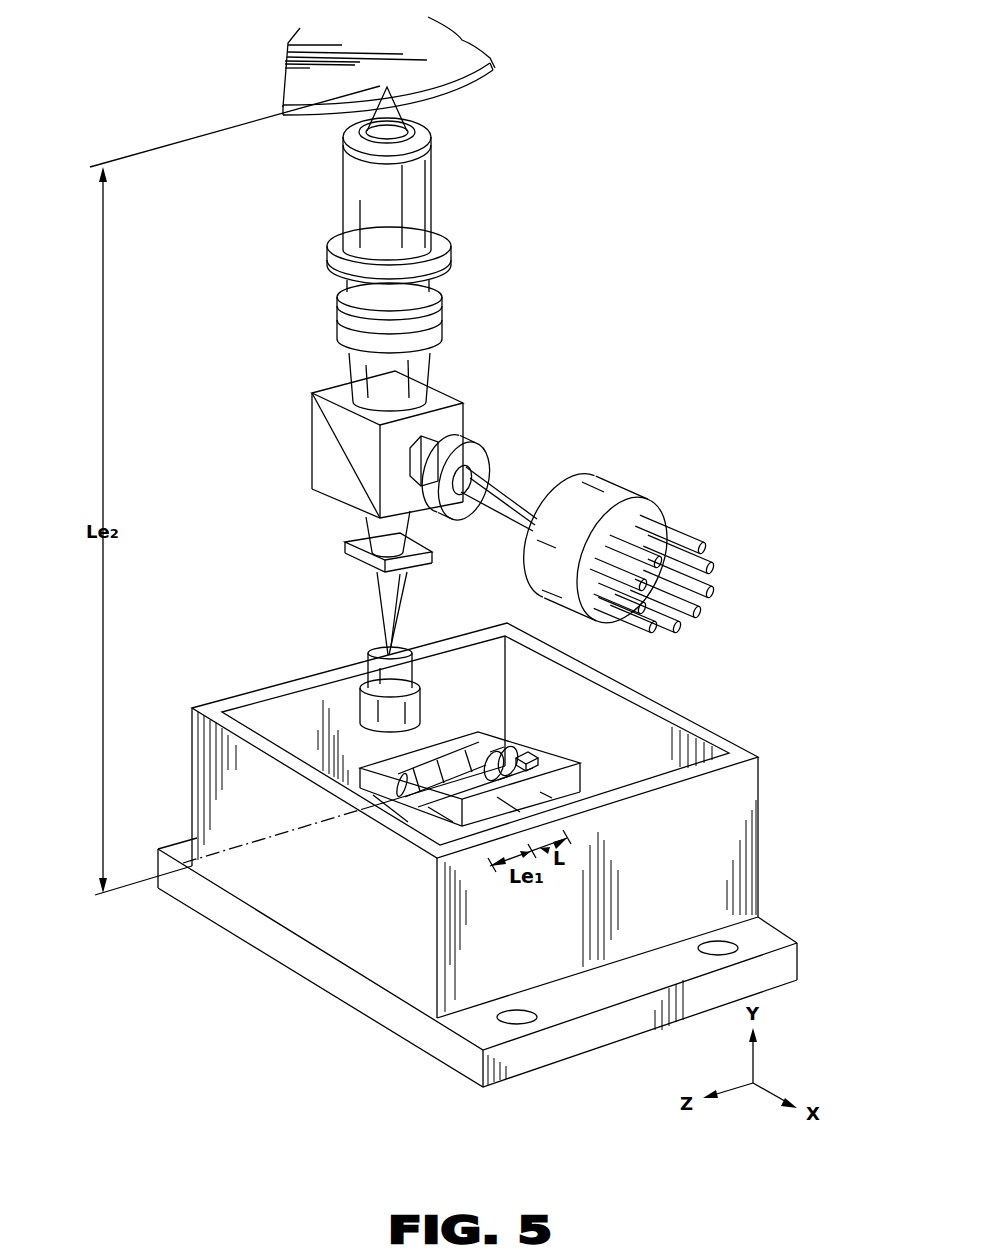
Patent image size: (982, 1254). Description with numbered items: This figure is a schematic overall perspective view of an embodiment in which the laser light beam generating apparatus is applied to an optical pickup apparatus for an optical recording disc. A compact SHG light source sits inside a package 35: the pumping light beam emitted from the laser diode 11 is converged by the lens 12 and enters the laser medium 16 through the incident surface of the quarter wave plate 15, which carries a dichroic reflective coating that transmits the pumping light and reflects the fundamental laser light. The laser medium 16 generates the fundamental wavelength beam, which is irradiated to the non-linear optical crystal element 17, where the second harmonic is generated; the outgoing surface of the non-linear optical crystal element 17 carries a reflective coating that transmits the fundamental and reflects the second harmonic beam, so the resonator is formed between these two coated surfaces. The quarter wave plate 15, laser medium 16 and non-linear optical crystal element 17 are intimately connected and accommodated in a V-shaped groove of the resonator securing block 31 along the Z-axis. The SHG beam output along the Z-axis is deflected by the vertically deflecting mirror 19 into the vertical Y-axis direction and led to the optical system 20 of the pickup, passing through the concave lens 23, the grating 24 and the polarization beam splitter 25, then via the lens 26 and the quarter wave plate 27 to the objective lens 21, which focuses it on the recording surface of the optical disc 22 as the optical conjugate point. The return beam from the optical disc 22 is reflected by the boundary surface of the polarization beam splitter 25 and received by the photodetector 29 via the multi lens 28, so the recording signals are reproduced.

The laser diode 11 is at (545, 750).
The lens 12 is at (525, 754).
The quarter wave plate 15 is at (505, 752).
The laser medium 16 is at (466, 762).
The non-linear optical crystal element 17 is at (437, 765).
The vertically deflecting mirror 19 is at (380, 813).
The optical system 20 is at (603, 342).
The objective lens 21 is at (434, 128).
The optical disc 22 is at (495, 72).
The concave lens 23 is at (362, 700).
The grating 24 is at (346, 544).
The polarization beam splitter 25 is at (325, 452).
The lens 26 is at (338, 330).
The quarter wave plate 27 is at (328, 254).
The multi lens 28 is at (476, 452).
The photodetector 29 is at (590, 497).
The resonator securing block 31 is at (577, 815).
The package 35 is at (712, 728).